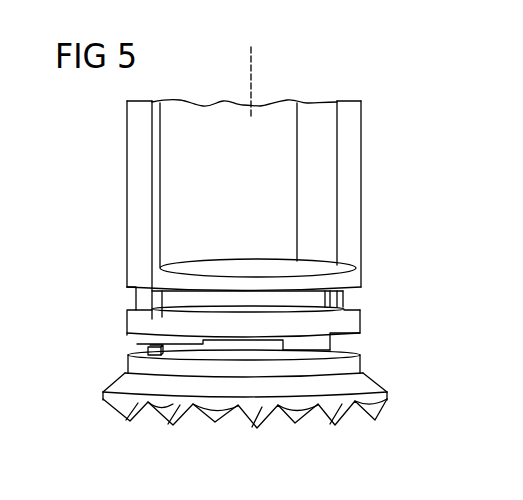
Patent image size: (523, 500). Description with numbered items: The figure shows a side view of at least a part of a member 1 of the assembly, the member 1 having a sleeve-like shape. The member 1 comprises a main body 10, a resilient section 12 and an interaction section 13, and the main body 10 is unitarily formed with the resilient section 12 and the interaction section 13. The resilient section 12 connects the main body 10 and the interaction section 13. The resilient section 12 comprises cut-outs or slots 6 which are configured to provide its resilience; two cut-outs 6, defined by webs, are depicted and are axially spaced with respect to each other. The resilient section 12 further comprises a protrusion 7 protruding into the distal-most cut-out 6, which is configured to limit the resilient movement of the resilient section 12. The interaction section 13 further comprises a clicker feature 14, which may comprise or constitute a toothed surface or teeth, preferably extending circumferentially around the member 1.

The member 1 is at (276, 69).
The main body 10 is at (315, 159).
The resilient section 12 is at (410, 280).
The cut-outs 6 is at (347, 298).
The protrusion 7 is at (148, 349).
The interaction section 13 is at (410, 372).
The clicker feature 14 is at (213, 419).